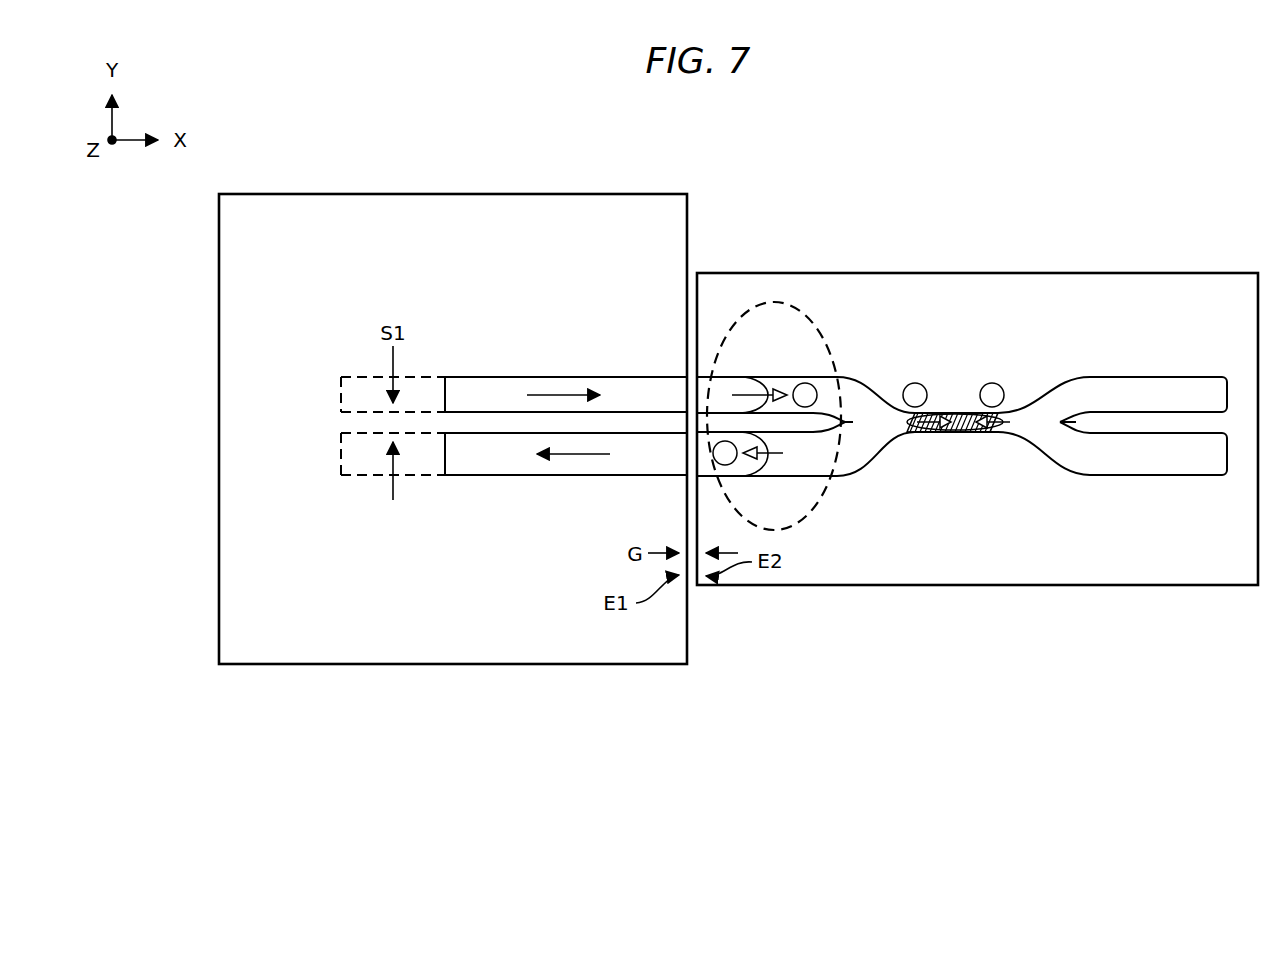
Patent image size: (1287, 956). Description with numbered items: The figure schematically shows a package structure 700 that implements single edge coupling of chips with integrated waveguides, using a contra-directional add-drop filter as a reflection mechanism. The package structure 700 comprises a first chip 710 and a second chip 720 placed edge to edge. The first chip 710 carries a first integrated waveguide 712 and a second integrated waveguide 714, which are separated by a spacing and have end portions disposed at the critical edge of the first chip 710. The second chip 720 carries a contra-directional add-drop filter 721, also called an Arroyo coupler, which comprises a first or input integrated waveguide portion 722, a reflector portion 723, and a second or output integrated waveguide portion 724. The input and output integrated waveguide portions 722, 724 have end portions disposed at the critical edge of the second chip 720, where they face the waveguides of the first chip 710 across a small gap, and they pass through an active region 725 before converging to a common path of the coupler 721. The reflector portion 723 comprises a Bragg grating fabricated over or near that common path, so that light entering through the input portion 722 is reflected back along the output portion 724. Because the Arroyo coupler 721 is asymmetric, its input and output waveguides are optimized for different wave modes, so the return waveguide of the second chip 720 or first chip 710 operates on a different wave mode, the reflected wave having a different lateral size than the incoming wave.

The package structure 700 is at (679, 113).
The first chip 710 is at (328, 194).
The first integrated waveguide 712 is at (492, 377).
The second integrated waveguide 714 is at (490, 478).
The second chip 720 is at (1178, 273).
The contra-directional add-drop filter 721 is at (886, 380).
The first integrated waveguide portion 722 is at (804, 377).
The reflector portion 723 is at (955, 412).
The second integrated waveguide portion 724 is at (802, 476).
The active region 725 is at (800, 307).